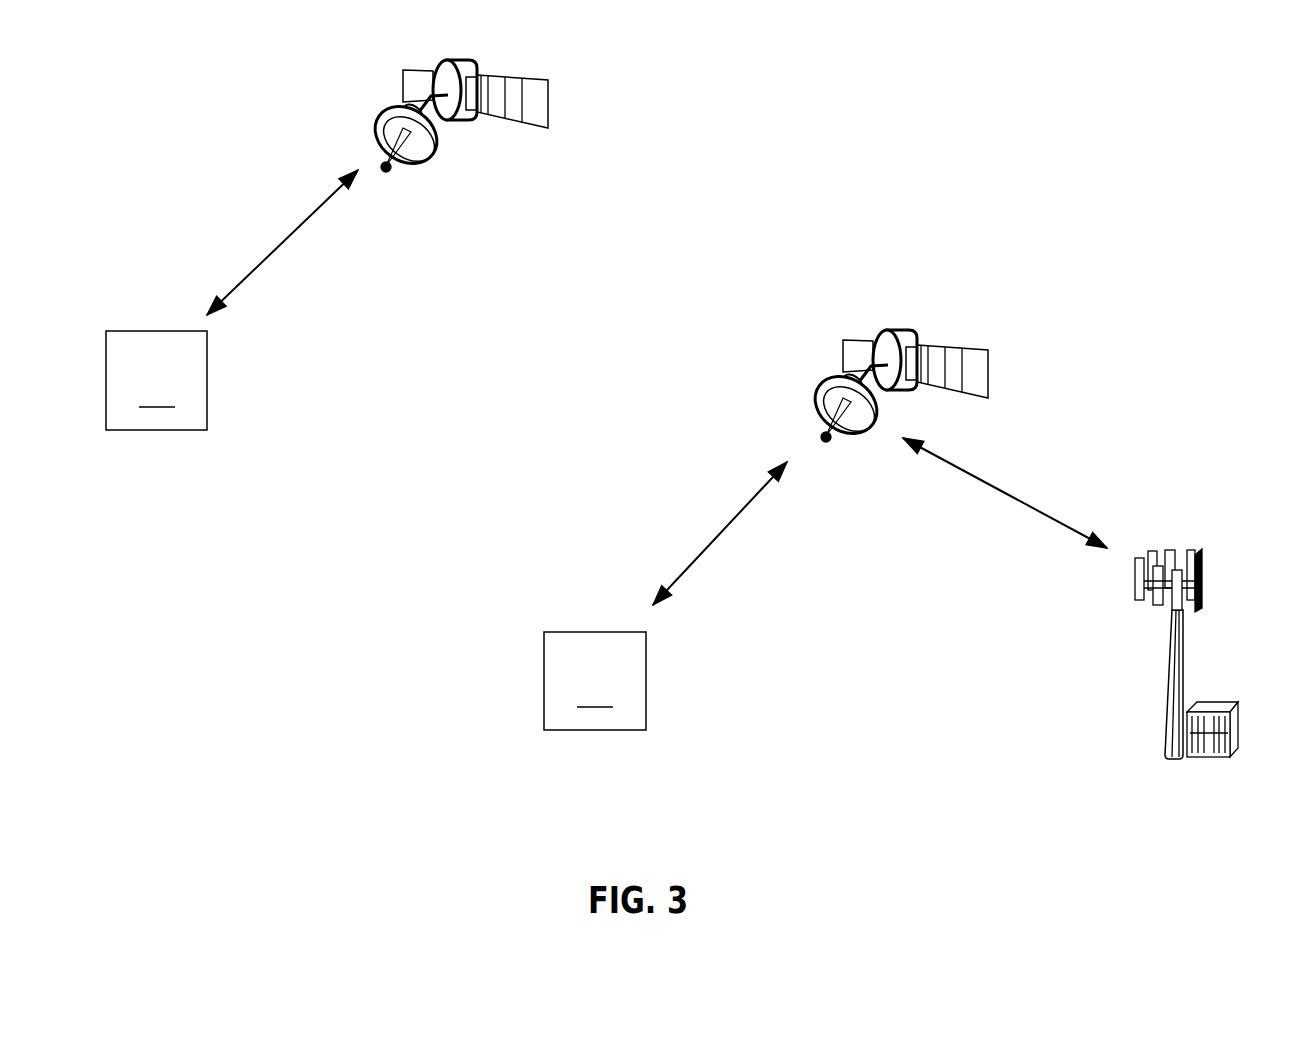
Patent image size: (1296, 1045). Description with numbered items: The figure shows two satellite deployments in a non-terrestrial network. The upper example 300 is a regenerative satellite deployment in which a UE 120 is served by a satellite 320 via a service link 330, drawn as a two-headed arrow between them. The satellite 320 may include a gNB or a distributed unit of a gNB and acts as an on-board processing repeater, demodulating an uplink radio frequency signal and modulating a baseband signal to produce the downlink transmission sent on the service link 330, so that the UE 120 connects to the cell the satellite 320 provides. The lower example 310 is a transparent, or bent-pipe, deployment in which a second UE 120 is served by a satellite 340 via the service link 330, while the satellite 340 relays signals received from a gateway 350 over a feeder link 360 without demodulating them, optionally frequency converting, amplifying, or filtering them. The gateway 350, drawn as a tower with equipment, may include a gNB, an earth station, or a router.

The example of a regenerative satellite deployment 300 is at (196, 128).
The example of a transparent satellite deployment 310 is at (655, 394).
The UE 120 is at (376, 530).
The satellite 320 is at (548, 96).
The service link 330 is at (282, 243).
The satellite 340 is at (988, 367).
The gateway 350 is at (1203, 581).
The feeder link 360 is at (1010, 493).